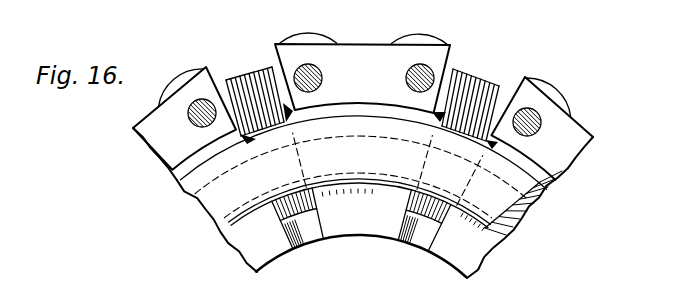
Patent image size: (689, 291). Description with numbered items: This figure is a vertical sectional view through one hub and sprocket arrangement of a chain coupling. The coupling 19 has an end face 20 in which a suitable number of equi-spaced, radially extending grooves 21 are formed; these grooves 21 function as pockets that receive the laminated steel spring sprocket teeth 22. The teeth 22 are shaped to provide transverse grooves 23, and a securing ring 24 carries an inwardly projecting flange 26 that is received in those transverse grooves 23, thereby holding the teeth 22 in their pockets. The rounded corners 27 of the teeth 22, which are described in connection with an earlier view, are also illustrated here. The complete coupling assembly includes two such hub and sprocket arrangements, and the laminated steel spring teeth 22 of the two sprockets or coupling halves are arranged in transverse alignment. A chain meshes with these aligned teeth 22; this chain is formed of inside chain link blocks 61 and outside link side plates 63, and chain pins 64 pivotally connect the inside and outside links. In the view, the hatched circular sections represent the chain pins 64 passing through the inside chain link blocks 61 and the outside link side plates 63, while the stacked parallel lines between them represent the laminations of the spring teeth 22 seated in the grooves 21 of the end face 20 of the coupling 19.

The coupling 19 is at (349, 247).
The end face 20 is at (361, 214).
The grooves 21 is at (303, 246).
The laminated steel spring sprocket teeth 22 is at (249, 80).
The transverse grooves 23 is at (461, 217).
The securing ring 24 is at (508, 205).
The inwardly projecting flange 26 is at (496, 242).
The rounded corners 27 is at (427, 113).
The inside chain link blocks 61 is at (348, 99).
The outside link side plates 63 is at (550, 88).
The chain pins 64 is at (196, 104).